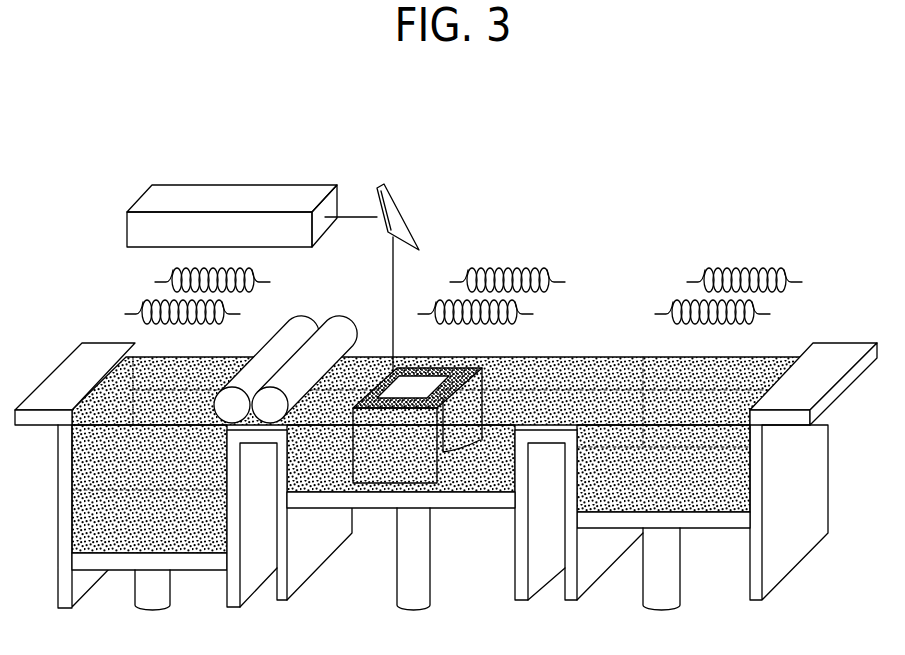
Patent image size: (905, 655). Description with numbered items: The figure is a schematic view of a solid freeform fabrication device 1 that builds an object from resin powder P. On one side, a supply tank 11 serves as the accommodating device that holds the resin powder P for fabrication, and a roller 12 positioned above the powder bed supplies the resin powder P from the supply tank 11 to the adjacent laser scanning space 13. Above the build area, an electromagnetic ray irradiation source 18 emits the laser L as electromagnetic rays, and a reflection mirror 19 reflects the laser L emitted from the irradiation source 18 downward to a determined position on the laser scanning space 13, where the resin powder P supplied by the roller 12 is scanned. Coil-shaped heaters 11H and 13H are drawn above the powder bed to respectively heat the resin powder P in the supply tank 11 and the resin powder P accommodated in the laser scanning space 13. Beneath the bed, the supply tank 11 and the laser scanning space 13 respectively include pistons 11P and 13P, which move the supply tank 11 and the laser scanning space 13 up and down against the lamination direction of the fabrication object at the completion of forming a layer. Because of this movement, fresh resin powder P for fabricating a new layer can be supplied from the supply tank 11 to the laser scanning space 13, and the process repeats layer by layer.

The solid freeform fabrication device 1 is at (15, 103).
The supply tank 11 is at (150, 345).
The heater 11H is at (123, 283).
The piston 11P is at (172, 607).
The roller 12 is at (287, 312).
The laser scanning space 13 is at (552, 341).
The heater 13H is at (545, 260).
The piston 13P is at (432, 603).
The electromagnetic ray irradiation source 18 is at (233, 184).
The reflection mirror 19 is at (387, 188).
The laser L is at (357, 214).
The resin powder P is at (621, 354).